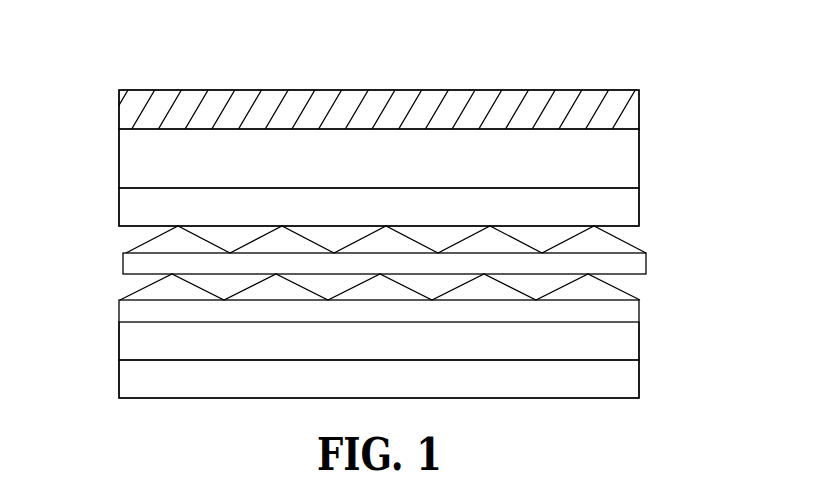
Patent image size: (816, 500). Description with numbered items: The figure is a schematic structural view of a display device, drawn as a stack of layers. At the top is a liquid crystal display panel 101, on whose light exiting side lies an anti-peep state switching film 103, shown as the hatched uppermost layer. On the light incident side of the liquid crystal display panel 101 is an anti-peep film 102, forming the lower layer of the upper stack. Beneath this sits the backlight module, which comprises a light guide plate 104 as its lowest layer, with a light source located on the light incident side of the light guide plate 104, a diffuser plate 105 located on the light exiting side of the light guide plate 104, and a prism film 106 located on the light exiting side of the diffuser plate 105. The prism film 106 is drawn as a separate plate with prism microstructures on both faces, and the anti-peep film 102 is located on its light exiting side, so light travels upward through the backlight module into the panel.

The liquid crystal display panel 101 is at (627, 157).
The anti-peep film 102 is at (138, 203).
The anti-peep state switching film 103 is at (393, 97).
The light guide plate 104 is at (140, 376).
The diffuser plate 105 is at (140, 333).
The prism film 106 is at (627, 272).